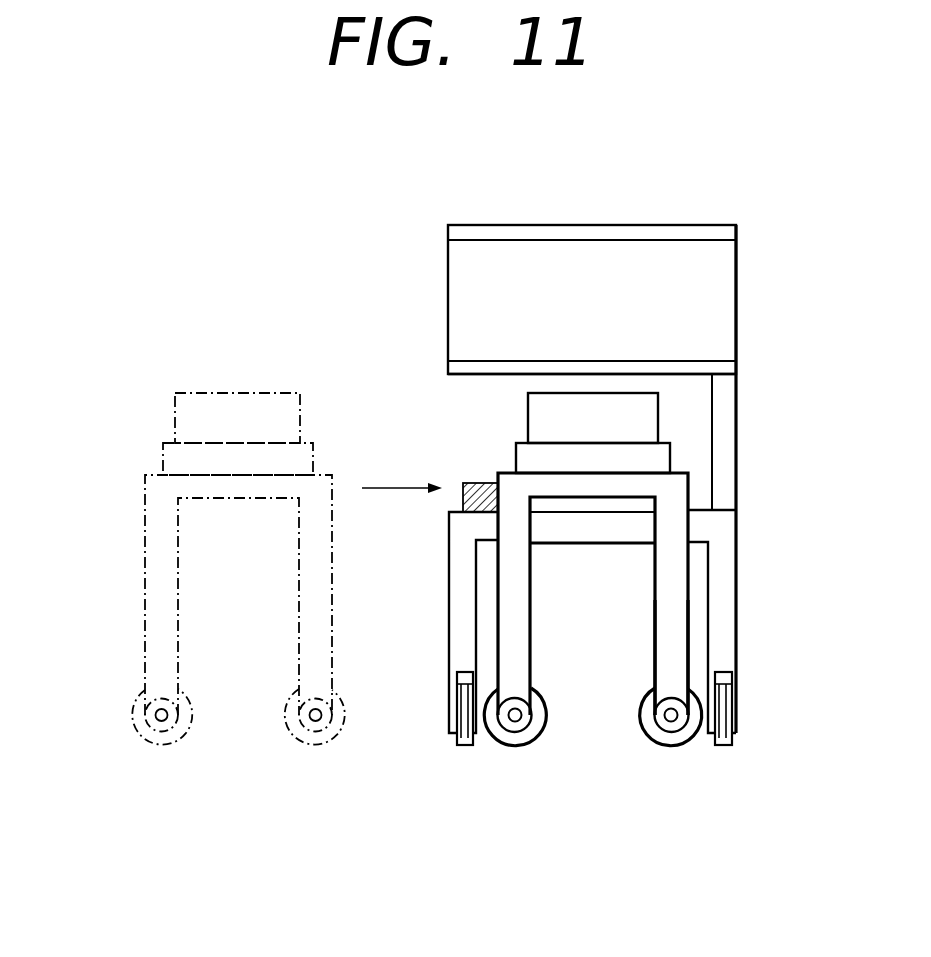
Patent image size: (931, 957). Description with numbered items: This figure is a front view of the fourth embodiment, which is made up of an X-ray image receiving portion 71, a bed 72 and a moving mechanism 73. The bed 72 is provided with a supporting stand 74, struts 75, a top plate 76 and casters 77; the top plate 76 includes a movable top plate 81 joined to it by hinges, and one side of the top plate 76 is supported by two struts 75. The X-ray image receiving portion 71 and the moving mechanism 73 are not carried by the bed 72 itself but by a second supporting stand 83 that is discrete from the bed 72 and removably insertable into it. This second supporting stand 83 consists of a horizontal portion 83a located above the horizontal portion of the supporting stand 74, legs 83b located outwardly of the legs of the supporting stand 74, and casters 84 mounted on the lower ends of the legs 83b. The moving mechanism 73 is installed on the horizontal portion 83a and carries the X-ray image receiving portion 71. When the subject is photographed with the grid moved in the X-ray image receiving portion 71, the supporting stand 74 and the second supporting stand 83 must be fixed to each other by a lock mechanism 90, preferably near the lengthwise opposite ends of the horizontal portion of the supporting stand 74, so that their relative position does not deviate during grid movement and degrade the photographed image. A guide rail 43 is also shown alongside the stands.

The guide rail 43 is at (722, 593).
The X-ray image receiving portion 71 is at (528, 413).
The bed 72 is at (587, 479).
The moving mechanism 73 is at (690, 458).
The supporting stand 74 is at (449, 590).
The struts 75 is at (722, 412).
The top plate 76 is at (722, 368).
The casters 77 is at (463, 746).
The movable top plate 81 is at (722, 275).
The second supporting stand 83 is at (450, 594).
The horizontal portion 83a is at (593, 493).
The legs 83b is at (667, 655).
The casters 84 is at (660, 749).
The lock mechanism 90 is at (480, 484).